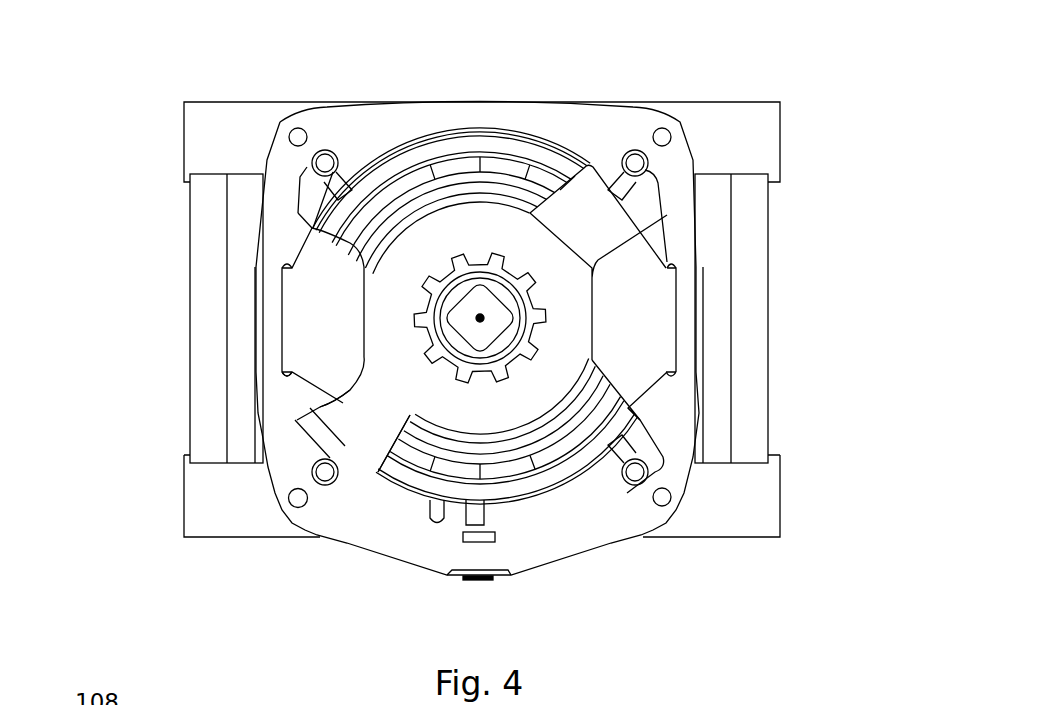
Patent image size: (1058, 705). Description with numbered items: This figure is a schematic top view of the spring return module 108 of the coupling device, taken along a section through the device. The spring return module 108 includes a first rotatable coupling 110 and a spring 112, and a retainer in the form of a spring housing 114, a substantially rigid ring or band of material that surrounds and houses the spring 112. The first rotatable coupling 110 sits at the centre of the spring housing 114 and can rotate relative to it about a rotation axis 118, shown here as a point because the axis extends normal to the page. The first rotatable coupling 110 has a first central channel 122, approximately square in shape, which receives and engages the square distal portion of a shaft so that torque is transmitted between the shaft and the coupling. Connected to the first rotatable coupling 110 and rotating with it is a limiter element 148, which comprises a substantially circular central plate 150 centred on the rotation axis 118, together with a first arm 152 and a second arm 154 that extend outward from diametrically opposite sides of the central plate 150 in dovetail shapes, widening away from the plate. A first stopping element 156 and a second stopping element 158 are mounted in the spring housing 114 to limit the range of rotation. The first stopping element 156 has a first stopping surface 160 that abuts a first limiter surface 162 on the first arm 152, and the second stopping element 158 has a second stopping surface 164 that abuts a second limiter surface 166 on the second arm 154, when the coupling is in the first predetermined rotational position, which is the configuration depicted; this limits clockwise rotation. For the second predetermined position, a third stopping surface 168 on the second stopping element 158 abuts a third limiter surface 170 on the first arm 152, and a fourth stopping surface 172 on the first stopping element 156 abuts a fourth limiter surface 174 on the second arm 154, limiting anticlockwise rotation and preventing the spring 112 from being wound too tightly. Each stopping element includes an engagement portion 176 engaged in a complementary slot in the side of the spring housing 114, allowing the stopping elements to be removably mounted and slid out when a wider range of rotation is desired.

The spring return module 108 is at (158, 81).
The first rotatable coupling 110 is at (452, 292).
The spring 112 is at (476, 152).
The spring housing 114 is at (530, 569).
The rotation axis 118 is at (483, 318).
The first central channel 122 is at (480, 336).
The limiter element 148 is at (520, 424).
The central plate 150 is at (468, 243).
The first arm 152 is at (588, 193).
The second arm 154 is at (363, 448).
The first stopping element 156 is at (650, 386).
The second stopping element 158 is at (305, 252).
The first stopping surface 160 is at (622, 240).
The first limiter surface 162 is at (604, 243).
The second stopping surface 164 is at (343, 403).
The second limiter surface 166 is at (344, 403).
The third stopping surface 168 is at (323, 230).
The third limiter surface 170 is at (566, 192).
The fourth stopping surface 172 is at (627, 402).
The fourth limiter surface 174 is at (390, 443).
The engagement portion 176 is at (285, 308).